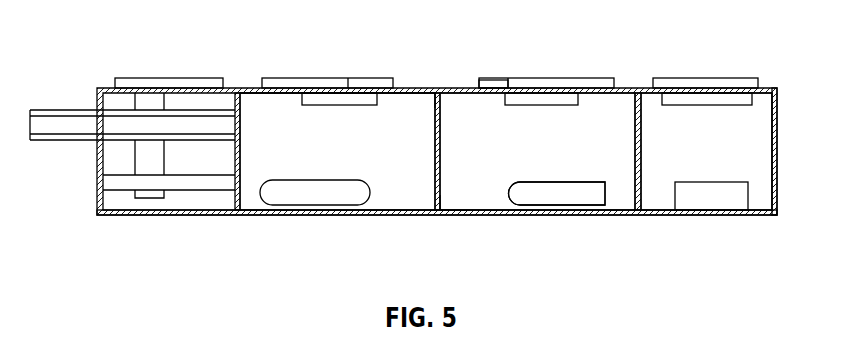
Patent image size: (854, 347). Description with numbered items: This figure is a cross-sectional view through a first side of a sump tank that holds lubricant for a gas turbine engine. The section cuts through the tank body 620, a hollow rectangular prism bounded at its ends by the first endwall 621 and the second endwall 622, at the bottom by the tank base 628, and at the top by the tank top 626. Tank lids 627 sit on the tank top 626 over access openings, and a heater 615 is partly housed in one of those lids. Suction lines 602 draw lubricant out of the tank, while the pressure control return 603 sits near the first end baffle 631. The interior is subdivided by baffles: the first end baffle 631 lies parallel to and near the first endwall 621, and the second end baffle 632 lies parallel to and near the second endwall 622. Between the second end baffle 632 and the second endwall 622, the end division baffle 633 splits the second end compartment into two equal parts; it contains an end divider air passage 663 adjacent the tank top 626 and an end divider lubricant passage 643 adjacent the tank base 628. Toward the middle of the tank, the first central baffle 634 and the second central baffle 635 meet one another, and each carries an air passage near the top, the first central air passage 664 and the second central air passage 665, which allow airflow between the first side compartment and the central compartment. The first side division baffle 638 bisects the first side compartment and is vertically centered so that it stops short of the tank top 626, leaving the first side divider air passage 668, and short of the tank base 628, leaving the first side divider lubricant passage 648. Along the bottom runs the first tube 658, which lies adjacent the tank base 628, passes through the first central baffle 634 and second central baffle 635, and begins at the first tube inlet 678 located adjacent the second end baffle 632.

The suction line 602 is at (62, 110).
The pressure control return 603 is at (112, 183).
The heater 615 is at (142, 143).
The tank body 620 is at (768, 85).
The first endwall 621 is at (100, 165).
The second endwall 622 is at (777, 163).
The tank top 626 is at (498, 85).
The tank lids 627 is at (205, 78).
The tank base 628 is at (498, 217).
The first end baffle 631 is at (240, 145).
The second end baffle 632 is at (642, 163).
The end division baffle 633 is at (750, 132).
The first central baffle 634 is at (382, 178).
The second central baffle 635 is at (482, 110).
The first side division baffle 638 is at (440, 143).
The end divider lubricant passage 643 is at (708, 193).
The first side divider lubricant passage 648 is at (443, 203).
The first tube 658 is at (308, 193).
The end divider air passage 663 is at (715, 100).
The first central air passage 664 is at (325, 98).
The second central air passage 665 is at (545, 100).
The first side divider air passage 668 is at (433, 108).
The first tube inlet 678 is at (608, 191).